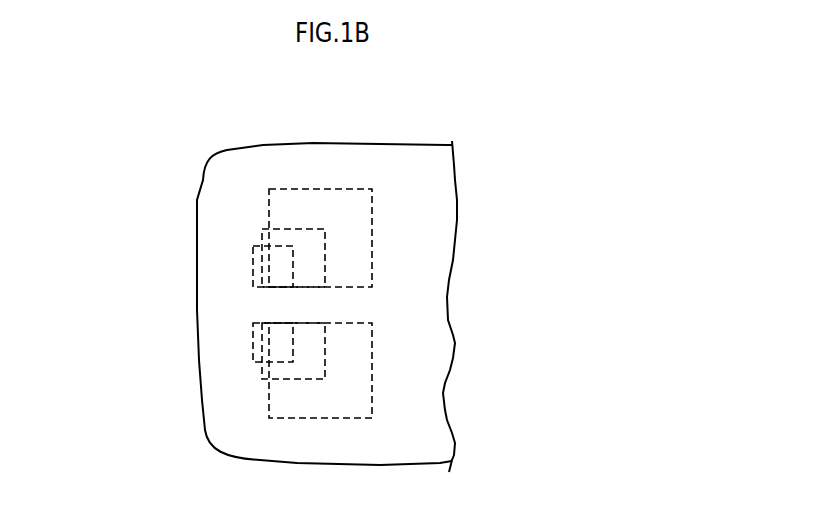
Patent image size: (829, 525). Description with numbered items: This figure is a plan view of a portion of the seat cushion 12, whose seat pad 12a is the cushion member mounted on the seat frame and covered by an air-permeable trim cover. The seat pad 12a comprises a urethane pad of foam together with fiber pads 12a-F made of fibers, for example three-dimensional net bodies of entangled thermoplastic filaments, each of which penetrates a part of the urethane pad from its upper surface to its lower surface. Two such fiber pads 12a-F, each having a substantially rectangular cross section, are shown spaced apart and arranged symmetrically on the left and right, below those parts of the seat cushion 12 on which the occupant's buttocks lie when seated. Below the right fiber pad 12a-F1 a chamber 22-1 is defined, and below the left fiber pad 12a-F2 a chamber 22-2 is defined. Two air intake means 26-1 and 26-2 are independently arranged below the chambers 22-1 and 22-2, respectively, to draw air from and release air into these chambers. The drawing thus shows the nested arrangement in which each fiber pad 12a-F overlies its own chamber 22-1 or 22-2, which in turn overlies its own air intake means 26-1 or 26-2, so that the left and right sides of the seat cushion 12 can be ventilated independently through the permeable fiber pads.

The seat cushion 12 is at (250, 145).
The seat pad 12a is at (220, 253).
The fiber pads 12a-F is at (456, 273).
The right fiber pad 12a-F1 is at (355, 208).
The left fiber pad 12a-F2 is at (348, 397).
The chamber 22-1 is at (298, 238).
The chamber 22-2 is at (295, 370).
The air intake means 26-1 is at (257, 272).
The air intake means 26-2 is at (257, 347).